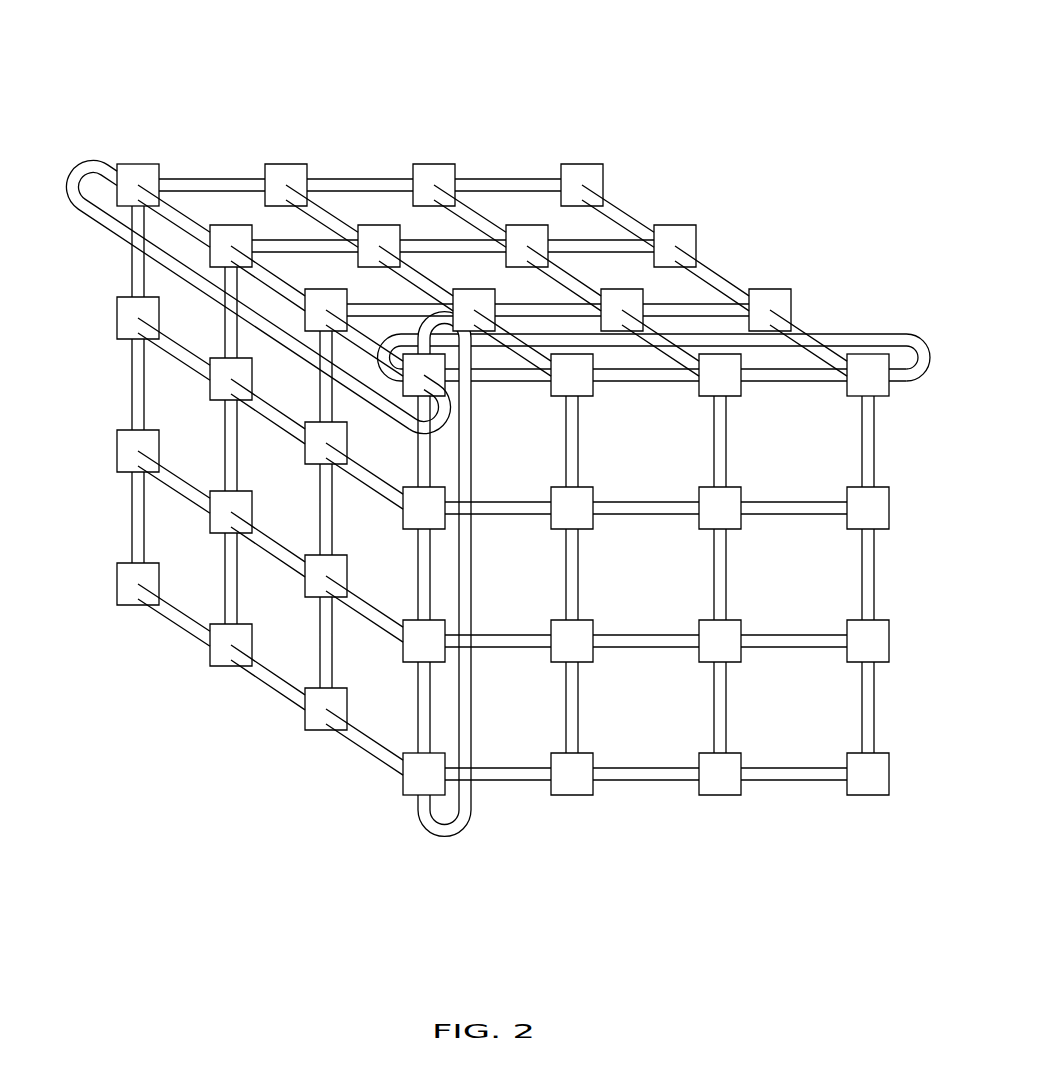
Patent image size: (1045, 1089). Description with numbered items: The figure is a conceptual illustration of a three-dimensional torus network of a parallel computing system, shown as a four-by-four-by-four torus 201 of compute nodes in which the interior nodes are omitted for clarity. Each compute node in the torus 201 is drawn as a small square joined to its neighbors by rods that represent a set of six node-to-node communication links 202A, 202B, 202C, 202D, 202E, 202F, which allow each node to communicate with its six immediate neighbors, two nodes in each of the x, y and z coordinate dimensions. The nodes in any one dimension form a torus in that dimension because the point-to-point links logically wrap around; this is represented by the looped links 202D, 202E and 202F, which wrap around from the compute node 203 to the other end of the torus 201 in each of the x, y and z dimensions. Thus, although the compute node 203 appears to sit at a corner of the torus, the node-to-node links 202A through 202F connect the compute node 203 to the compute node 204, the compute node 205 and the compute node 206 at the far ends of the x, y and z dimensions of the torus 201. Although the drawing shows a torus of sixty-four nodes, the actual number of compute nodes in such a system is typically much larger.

The torus 201 is at (655, 82).
The node-to-node communication link 202A is at (490, 383).
The node-to-node communication link 202B is at (431, 464).
The node-to-node communication link 202C is at (368, 336).
The node-to-node communication link 202D is at (888, 333).
The node-to-node communication link 202E is at (443, 837).
The node-to-node communication link 202F is at (76, 162).
The compute node 203 is at (403, 393).
The compute node 204 is at (138, 172).
The compute node 205 is at (872, 383).
The compute node 206 is at (413, 780).